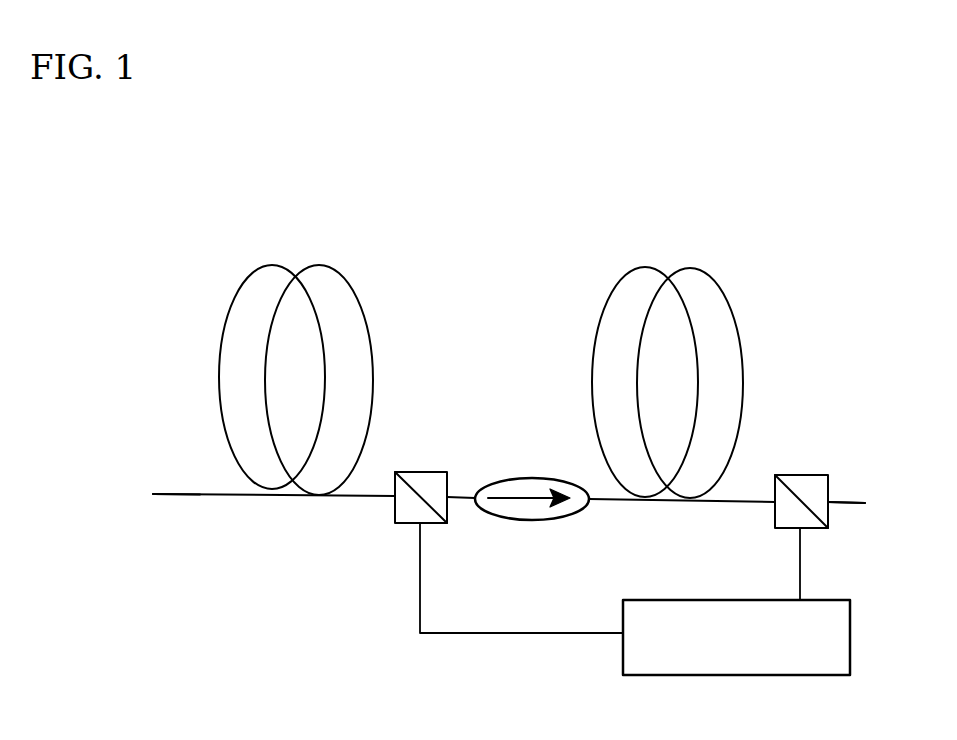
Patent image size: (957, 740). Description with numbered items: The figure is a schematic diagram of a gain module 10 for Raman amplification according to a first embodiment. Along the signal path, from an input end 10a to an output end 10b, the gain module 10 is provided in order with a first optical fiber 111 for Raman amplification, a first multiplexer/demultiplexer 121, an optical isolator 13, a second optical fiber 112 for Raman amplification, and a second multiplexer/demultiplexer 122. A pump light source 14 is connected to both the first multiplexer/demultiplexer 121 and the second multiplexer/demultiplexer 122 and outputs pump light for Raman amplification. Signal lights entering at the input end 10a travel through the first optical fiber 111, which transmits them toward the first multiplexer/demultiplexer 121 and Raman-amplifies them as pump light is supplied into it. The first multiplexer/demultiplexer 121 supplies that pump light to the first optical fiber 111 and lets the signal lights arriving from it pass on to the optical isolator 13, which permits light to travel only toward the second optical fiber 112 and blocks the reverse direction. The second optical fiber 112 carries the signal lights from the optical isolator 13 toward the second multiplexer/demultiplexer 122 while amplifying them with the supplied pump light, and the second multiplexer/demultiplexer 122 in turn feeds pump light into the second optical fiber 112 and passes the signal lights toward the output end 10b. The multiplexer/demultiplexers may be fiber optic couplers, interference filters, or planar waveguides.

The gain module 10 is at (805, 262).
The input end 10a is at (179, 497).
The output end 10b is at (848, 504).
The first optical fiber for Raman amplification 111 is at (248, 276).
The second optical fiber for Raman amplification 112 is at (690, 268).
The first multiplexer/demultiplexer 121 is at (420, 472).
The second multiplexer/demultiplexer 122 is at (800, 475).
The optical isolator 13 is at (532, 478).
The pump light source 14 is at (850, 628).